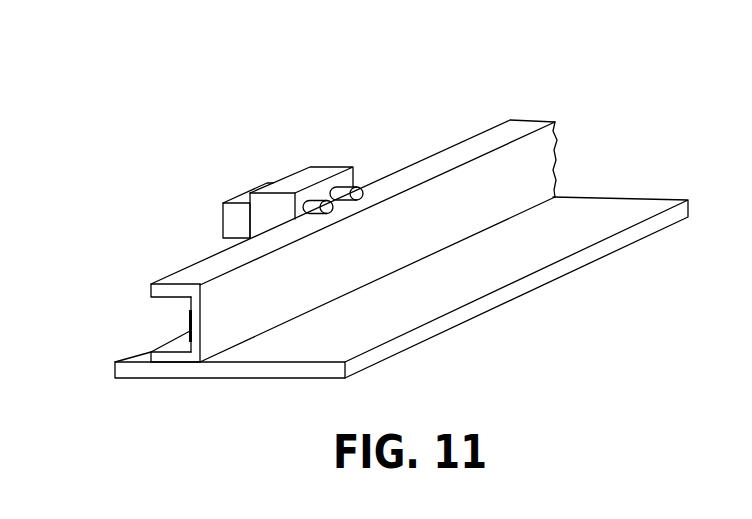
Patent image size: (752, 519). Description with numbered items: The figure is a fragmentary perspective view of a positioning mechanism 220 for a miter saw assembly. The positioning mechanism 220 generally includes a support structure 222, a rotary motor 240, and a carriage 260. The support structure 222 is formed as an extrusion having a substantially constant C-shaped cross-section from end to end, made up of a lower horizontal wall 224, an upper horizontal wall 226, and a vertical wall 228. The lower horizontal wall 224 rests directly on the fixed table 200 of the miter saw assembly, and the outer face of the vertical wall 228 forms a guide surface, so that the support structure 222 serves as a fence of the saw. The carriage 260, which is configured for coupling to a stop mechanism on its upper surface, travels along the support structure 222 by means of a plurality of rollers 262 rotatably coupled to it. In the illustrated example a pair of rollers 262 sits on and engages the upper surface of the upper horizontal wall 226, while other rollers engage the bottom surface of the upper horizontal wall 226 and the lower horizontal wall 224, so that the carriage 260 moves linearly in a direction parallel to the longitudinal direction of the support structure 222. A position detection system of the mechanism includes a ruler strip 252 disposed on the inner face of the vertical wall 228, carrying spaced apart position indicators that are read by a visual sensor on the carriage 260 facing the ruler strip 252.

The fixed table 200 is at (592, 214).
The positioning mechanism 220 is at (208, 88).
The support structure 222 is at (180, 267).
The lower horizontal wall 224 is at (177, 362).
The upper horizontal wall 226 is at (519, 124).
The vertical wall 228 is at (377, 242).
The rotary motor 240 is at (240, 200).
The ruler strip 252 is at (190, 329).
The carriage 260 is at (318, 166).
The rollers 262 is at (355, 190).